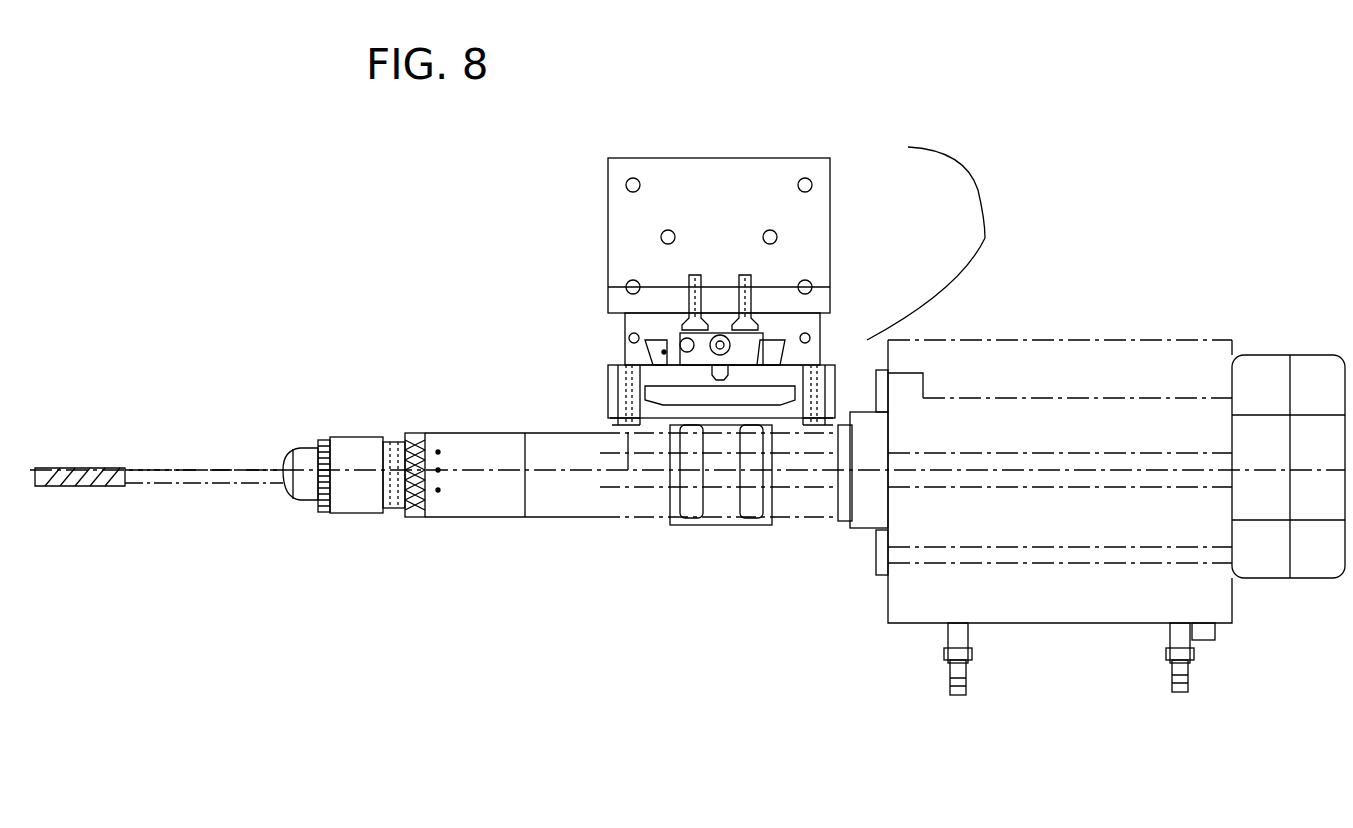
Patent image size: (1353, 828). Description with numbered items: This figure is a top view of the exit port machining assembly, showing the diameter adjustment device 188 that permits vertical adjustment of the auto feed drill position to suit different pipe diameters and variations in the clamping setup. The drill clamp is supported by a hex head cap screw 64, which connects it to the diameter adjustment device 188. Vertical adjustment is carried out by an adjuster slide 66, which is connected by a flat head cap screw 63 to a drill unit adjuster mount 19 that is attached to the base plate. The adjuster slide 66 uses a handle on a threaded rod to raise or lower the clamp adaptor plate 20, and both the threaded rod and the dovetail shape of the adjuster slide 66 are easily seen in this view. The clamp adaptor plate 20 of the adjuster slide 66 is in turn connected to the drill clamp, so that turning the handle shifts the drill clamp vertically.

The drill unit adjuster mount 19 is at (820, 222).
The flat head cap screw 63 is at (688, 272).
The adjuster slide 66 is at (835, 325).
The clamp adaptor plate 20 is at (608, 375).
The hex head cap screw 64 is at (628, 465).
The diameter adjustment device 188 is at (985, 240).